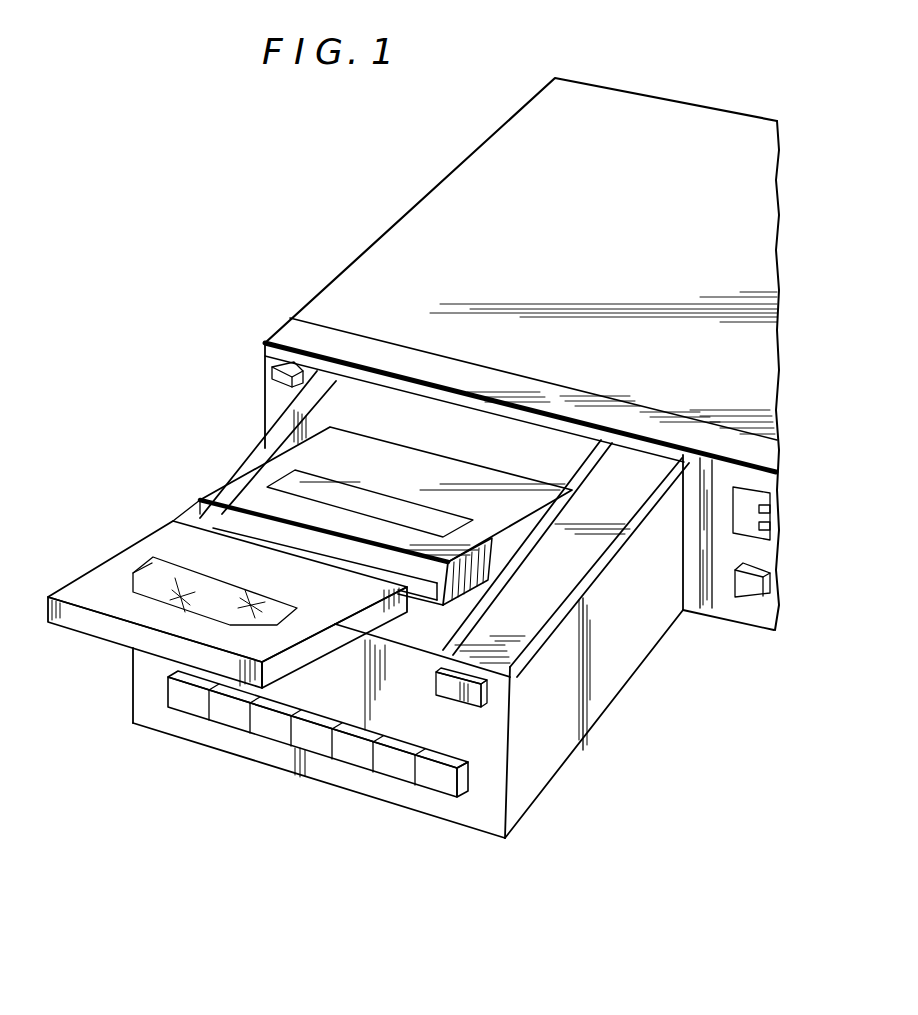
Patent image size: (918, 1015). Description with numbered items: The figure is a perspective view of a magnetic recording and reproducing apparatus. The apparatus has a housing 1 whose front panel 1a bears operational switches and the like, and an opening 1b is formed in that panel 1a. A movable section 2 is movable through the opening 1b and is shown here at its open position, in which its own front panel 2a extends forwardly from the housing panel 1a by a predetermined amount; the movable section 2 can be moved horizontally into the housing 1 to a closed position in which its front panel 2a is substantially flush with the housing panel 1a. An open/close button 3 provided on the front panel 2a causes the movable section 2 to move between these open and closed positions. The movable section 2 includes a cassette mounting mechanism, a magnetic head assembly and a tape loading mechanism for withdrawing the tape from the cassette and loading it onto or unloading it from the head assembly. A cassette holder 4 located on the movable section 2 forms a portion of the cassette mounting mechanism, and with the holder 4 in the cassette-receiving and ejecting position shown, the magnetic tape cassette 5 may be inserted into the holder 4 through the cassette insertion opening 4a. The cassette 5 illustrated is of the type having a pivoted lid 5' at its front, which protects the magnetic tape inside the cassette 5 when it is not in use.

The housing 1 is at (393, 223).
The front panel 1a is at (725, 612).
The opening 1b is at (268, 358).
The movable section 2 is at (588, 733).
The front panel 2a is at (392, 793).
The open/close button 3 is at (487, 698).
The cassette holder 4 is at (494, 527).
The cassette insertion opening 4a is at (430, 579).
The magnetic tape cassette 5 is at (227, 591).
The pivoted lid 5' is at (183, 486).